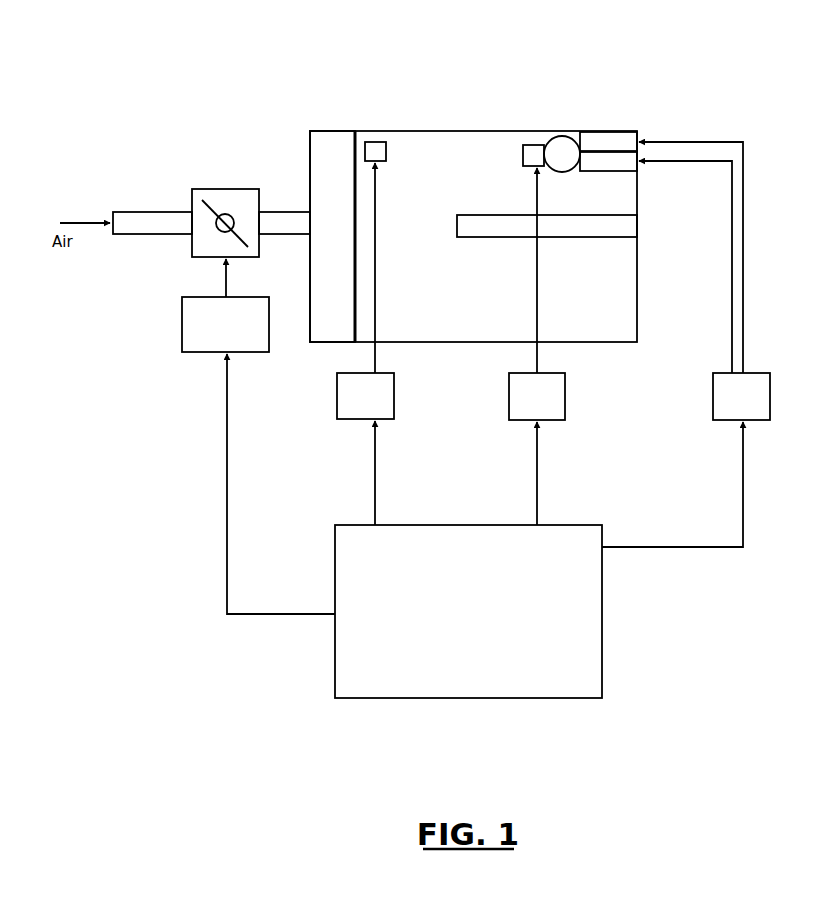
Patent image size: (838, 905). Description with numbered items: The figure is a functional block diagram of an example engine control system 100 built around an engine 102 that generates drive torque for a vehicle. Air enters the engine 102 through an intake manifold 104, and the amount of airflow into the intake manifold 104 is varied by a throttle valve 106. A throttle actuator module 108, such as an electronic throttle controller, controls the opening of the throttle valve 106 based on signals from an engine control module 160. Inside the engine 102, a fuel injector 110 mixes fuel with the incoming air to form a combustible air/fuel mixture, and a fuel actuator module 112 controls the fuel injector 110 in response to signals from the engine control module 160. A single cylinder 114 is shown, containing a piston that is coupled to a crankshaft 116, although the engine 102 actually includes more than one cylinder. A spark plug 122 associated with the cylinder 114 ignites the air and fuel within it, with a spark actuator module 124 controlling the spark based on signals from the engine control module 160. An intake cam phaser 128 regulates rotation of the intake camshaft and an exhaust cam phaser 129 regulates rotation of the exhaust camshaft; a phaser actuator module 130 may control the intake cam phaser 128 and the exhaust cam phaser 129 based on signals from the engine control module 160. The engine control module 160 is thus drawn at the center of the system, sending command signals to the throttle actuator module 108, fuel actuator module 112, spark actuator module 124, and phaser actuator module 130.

The engine control system 100 is at (131, 47).
The engine 102 is at (600, 343).
The intake manifold 104 is at (330, 131).
The throttle valve 106 is at (226, 189).
The throttle actuator module 108 is at (205, 352).
The fuel injector 110 is at (376, 142).
The fuel actuator module 112 is at (356, 420).
The cylinder 114 is at (562, 136).
The crankshaft 116 is at (513, 237).
The spark plug 122 is at (535, 145).
The spark actuator module 124 is at (524, 420).
The intake cam phaser 128 is at (641, 132).
The exhaust cam phaser 129 is at (641, 172).
The phaser actuator module 130 is at (762, 421).
The engine control module 160 is at (478, 698).